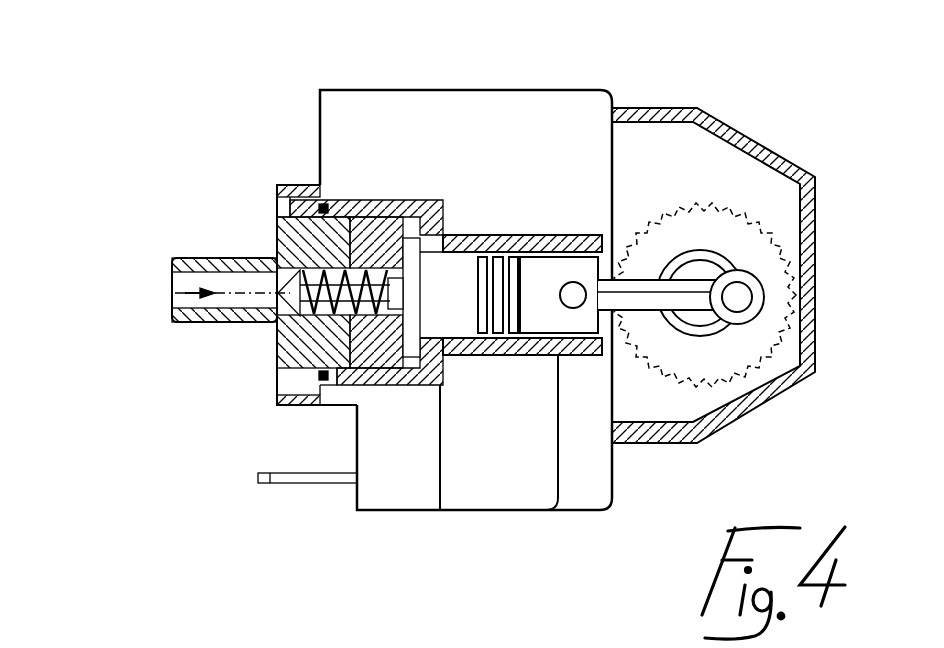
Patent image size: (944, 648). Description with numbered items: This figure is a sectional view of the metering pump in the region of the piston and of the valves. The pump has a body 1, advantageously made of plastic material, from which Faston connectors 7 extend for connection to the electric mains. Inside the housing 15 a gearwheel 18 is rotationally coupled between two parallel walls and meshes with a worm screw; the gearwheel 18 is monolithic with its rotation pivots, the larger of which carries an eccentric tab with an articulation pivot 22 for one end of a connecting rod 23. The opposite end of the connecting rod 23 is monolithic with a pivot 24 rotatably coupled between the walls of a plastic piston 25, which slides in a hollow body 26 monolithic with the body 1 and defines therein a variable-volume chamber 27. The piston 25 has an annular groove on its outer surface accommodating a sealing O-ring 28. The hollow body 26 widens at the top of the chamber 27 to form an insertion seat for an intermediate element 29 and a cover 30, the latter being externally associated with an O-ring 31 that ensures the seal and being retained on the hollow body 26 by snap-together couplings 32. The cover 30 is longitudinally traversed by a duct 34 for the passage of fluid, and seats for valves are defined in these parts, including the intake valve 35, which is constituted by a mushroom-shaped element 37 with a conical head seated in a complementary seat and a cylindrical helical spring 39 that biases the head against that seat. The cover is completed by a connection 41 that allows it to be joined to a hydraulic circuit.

The body 1 is at (438, 115).
The Faston connector 7 is at (285, 484).
The housing 15 is at (727, 132).
The gearwheel 18 is at (740, 253).
The articulation pivot 22 is at (737, 300).
The connecting rod 23 is at (660, 300).
The pivot 24 is at (573, 302).
The piston 25 is at (540, 270).
The hollow body 26 is at (465, 355).
The variable-volume chamber 27 is at (460, 265).
The sealing O-ring 28 is at (487, 357).
The intermediate element 29 is at (402, 375).
The cover 30 is at (300, 342).
The O-ring 31 is at (333, 405).
The snap-together coupling 32 is at (290, 185).
The duct 34 is at (402, 205).
The intake valve 35 is at (172, 292).
The mushroom-shaped element 37 is at (278, 294).
The cylindrical helical spring 39 is at (322, 362).
The connection 41 is at (190, 258).